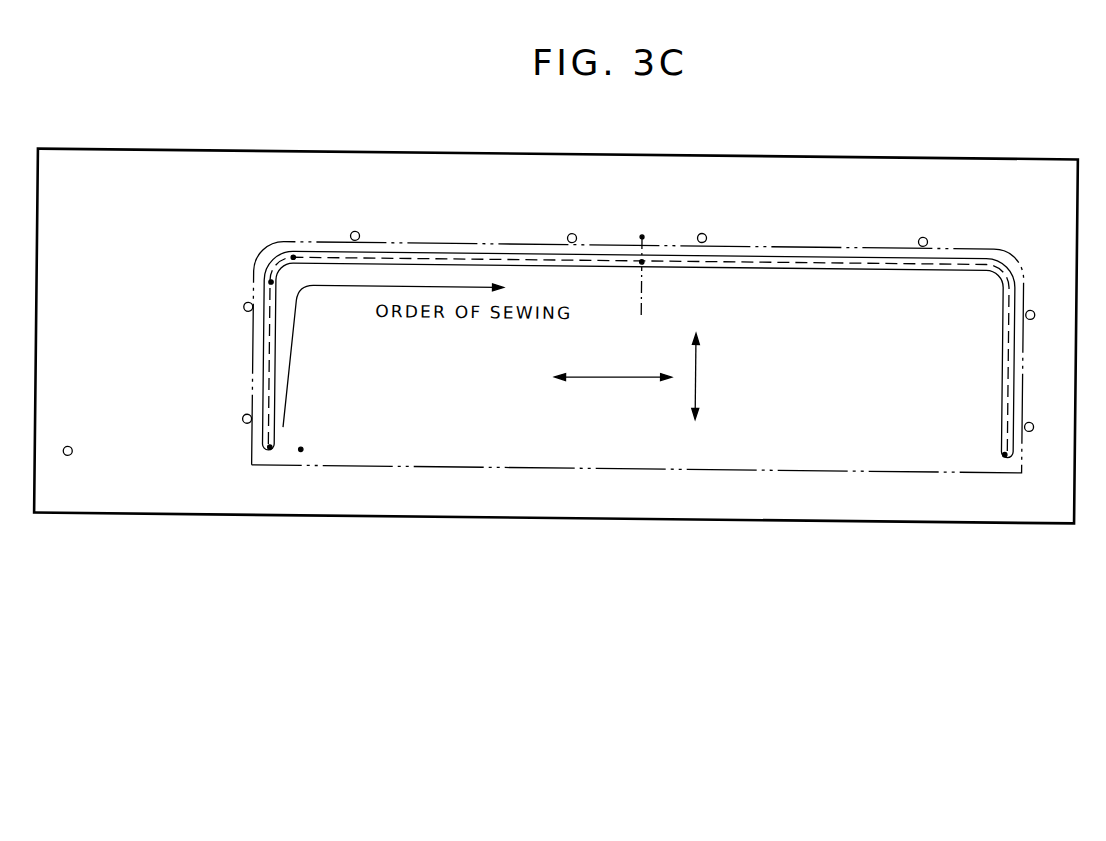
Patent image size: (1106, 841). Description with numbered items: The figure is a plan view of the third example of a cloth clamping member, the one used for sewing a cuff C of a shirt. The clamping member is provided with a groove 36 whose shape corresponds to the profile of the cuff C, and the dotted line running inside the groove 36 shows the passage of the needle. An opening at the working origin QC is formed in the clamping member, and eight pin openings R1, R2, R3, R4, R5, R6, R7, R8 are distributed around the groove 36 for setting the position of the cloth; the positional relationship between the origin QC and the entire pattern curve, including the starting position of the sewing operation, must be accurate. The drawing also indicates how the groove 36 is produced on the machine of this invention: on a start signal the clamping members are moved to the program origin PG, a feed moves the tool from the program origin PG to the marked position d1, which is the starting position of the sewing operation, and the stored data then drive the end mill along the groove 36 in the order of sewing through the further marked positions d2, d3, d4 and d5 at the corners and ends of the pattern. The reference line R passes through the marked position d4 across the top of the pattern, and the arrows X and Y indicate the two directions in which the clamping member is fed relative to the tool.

The cuff C is at (638, 154).
The reference line of work R is at (642, 234).
The groove 36 is at (861, 257).
The marked position d1 is at (271, 455).
The marked position d2 is at (267, 283).
The marked position d3 is at (292, 258).
The marked position d4 is at (643, 259).
The marked position d5 (sewing end) d5 is at (1003, 450).
The pin opening R1 is at (244, 419).
The pin opening R2 is at (244, 313).
The pin opening R3 is at (357, 234).
The pin opening R4 is at (568, 234).
The pin opening R5 is at (706, 234).
The pin opening R6 is at (926, 235).
The pin opening R7 is at (1032, 306).
The pin opening R8 is at (1031, 418).
The opening at the working origin QC is at (74, 456).
The program origin PG is at (319, 442).
The X direction X is at (613, 366).
The Y direction Y is at (704, 376).